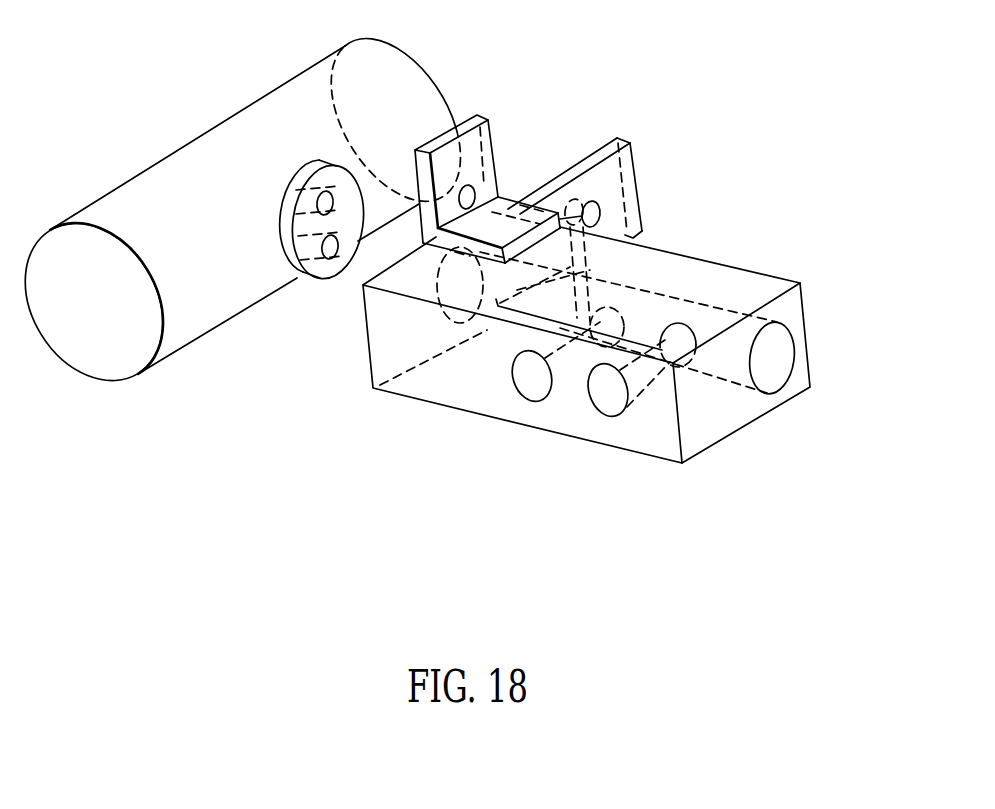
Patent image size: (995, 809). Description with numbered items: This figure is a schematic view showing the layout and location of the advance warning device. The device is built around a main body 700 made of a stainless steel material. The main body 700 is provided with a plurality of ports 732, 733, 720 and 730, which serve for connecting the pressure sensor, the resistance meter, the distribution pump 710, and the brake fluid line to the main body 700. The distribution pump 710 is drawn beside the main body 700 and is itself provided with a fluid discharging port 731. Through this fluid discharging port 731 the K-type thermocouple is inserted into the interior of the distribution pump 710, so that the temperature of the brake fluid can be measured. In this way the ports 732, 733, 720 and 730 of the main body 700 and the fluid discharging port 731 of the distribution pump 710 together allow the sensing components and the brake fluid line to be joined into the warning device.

The main body 700 is at (730, 265).
The distribution pump 710 is at (190, 144).
The port 720 is at (455, 300).
The port 730 is at (780, 345).
The fluid discharging port 731 is at (327, 200).
The port 732 is at (528, 384).
The port 733 is at (606, 398).